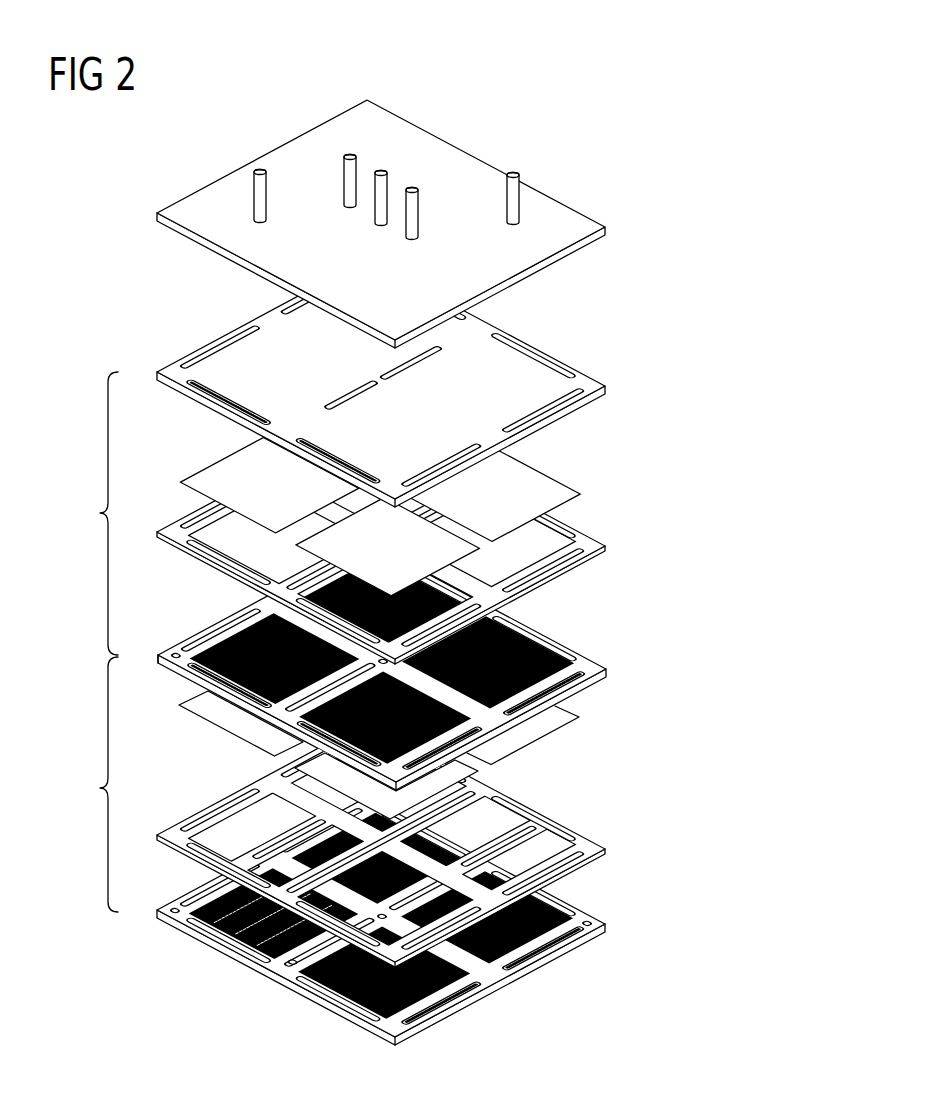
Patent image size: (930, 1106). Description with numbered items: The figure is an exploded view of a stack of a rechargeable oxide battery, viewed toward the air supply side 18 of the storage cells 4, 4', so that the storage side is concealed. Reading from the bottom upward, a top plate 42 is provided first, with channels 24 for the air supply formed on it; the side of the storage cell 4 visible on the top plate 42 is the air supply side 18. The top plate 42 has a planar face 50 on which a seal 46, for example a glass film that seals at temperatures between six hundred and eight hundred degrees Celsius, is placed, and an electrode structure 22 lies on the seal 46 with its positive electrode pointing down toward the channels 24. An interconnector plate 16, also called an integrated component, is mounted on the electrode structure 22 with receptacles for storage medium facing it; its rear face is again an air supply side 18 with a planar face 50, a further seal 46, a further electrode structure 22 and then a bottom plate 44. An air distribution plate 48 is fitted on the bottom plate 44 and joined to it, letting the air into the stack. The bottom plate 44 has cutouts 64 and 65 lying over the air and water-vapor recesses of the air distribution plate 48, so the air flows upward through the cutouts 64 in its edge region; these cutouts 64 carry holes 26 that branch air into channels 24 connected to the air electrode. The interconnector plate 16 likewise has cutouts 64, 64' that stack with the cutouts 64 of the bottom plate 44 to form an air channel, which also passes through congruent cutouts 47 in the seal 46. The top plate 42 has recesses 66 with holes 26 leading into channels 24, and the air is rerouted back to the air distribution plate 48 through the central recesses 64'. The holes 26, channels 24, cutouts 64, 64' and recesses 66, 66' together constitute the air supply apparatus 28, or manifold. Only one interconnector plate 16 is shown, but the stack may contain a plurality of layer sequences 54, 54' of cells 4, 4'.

The air distribution plate 48 is at (437, 148).
The bottom plate 44 is at (592, 385).
The cutouts 64 is at (255, 460).
The recesses 64' is at (485, 389).
The cutouts 65 is at (557, 370).
The electrode structure 22 is at (562, 492).
The seal 46 is at (595, 547).
The cutouts 47 is at (218, 558).
The interconnector plate 16 is at (597, 668).
The air supply side 18 is at (215, 658).
The holes 26 is at (249, 618).
The air supply apparatus 28 is at (150, 650).
The planar face 50 is at (477, 710).
The top plate 42 is at (597, 920).
The channels 24 is at (260, 947).
The recesses 66 is at (388, 916).
The recesses 66' is at (267, 987).
The storage cell 4 is at (84, 784).
The layer sequence 54 is at (84, 784).
The storage cell 4' is at (81, 513).
The layer sequence 54' is at (81, 513).